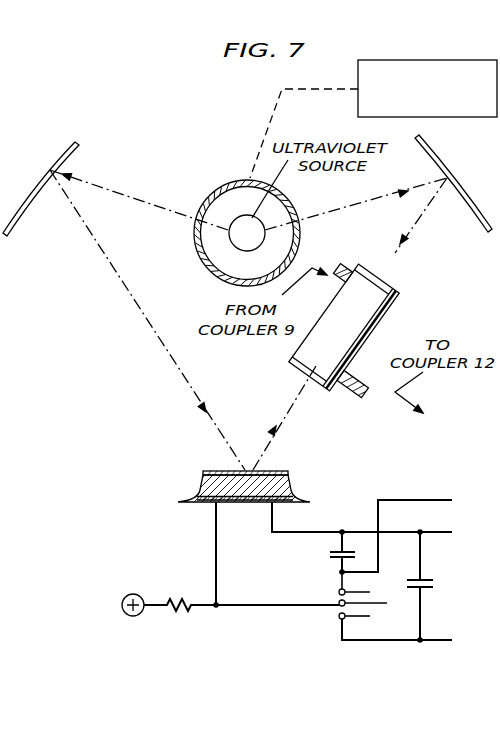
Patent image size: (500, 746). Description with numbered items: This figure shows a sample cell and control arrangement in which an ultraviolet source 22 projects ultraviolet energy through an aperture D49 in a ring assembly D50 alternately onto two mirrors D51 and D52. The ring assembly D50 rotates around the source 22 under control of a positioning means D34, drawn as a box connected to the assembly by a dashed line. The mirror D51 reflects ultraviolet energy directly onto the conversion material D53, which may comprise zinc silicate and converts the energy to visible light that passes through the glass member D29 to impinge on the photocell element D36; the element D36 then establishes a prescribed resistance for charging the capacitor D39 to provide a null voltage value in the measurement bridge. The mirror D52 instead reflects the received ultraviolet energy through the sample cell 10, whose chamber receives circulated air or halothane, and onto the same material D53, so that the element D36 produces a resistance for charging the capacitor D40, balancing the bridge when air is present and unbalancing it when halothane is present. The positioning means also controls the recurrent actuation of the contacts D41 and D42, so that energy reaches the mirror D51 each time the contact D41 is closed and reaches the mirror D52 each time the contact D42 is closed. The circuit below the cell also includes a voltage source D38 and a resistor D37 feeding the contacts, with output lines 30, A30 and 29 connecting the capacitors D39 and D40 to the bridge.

The positioning means D34 is at (407, 60).
The ring assembly D50 is at (218, 187).
The aperture D49 is at (300, 248).
The ultraviolet source 22 is at (250, 245).
The mirror D51 is at (63, 143).
The mirror D52 is at (440, 153).
The sample cell 10 is at (390, 308).
The glass member D29 is at (234, 489).
The conversion material D53 is at (273, 471).
The photocell element D36 is at (203, 501).
The output line 30 is at (438, 500).
The output line A A30 is at (440, 532).
The ground line 29 is at (442, 640).
The capacitor D40 is at (327, 556).
The capacitor D39 is at (435, 584).
The contact D42 is at (373, 595).
The contact D41 is at (373, 606).
The voltage source D38 is at (132, 594).
The resistor D37 is at (180, 612).